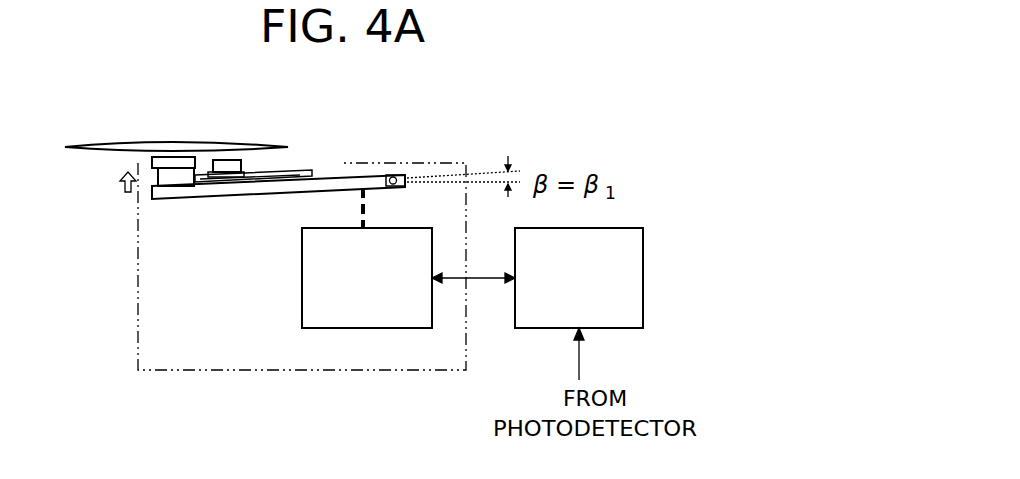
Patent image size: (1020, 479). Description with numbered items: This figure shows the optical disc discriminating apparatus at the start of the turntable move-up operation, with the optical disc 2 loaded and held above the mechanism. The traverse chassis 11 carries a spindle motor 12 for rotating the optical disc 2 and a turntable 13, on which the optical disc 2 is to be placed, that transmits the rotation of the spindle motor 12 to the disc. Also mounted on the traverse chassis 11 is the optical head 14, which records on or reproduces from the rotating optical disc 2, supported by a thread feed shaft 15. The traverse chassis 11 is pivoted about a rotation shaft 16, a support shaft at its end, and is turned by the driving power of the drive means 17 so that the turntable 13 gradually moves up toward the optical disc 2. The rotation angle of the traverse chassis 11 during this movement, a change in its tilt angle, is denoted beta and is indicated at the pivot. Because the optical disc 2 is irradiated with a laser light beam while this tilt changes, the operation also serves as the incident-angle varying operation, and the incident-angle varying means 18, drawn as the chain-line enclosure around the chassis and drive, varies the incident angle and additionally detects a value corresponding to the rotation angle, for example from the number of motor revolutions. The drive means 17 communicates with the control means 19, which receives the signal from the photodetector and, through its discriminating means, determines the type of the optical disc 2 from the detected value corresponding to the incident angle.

The optical disc 2 is at (100, 142).
The traverse chassis 11 is at (190, 193).
The spindle motor 12 is at (158, 180).
The turntable 13 is at (175, 157).
The optical head 14 is at (230, 160).
The thread feed shaft 15 is at (313, 170).
The rotation shaft 16 is at (402, 173).
The drive means 17 is at (302, 262).
The incident-angle varying means 18 is at (138, 278).
The control means 19 is at (643, 293).